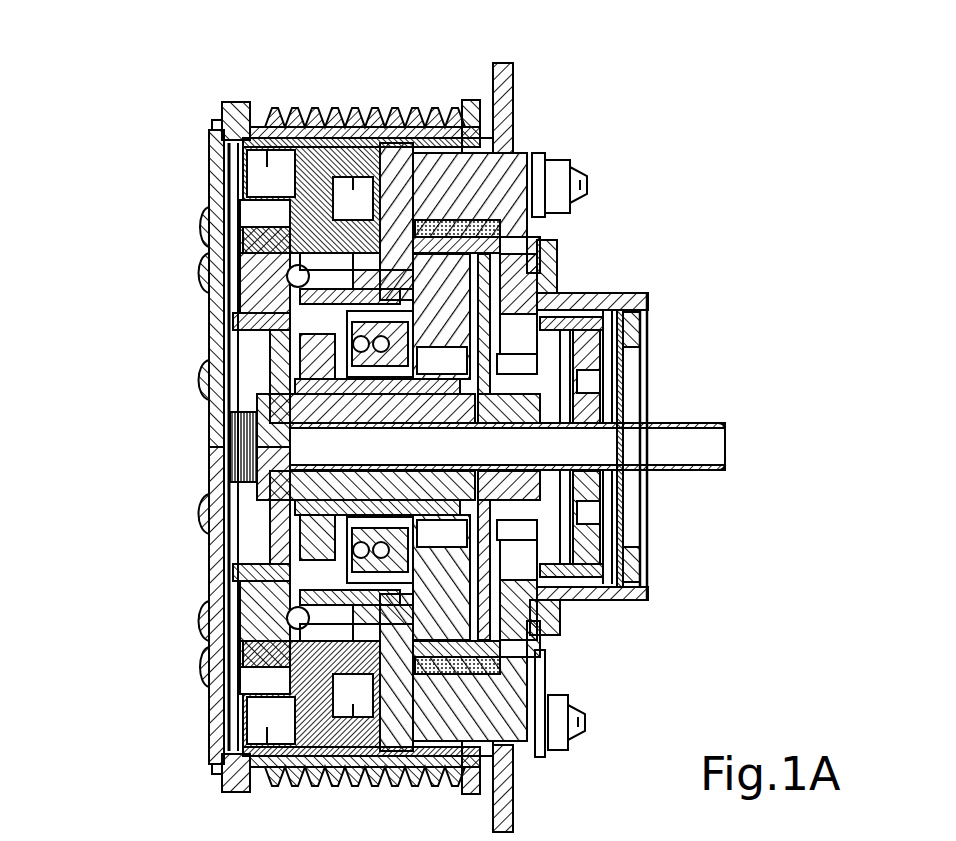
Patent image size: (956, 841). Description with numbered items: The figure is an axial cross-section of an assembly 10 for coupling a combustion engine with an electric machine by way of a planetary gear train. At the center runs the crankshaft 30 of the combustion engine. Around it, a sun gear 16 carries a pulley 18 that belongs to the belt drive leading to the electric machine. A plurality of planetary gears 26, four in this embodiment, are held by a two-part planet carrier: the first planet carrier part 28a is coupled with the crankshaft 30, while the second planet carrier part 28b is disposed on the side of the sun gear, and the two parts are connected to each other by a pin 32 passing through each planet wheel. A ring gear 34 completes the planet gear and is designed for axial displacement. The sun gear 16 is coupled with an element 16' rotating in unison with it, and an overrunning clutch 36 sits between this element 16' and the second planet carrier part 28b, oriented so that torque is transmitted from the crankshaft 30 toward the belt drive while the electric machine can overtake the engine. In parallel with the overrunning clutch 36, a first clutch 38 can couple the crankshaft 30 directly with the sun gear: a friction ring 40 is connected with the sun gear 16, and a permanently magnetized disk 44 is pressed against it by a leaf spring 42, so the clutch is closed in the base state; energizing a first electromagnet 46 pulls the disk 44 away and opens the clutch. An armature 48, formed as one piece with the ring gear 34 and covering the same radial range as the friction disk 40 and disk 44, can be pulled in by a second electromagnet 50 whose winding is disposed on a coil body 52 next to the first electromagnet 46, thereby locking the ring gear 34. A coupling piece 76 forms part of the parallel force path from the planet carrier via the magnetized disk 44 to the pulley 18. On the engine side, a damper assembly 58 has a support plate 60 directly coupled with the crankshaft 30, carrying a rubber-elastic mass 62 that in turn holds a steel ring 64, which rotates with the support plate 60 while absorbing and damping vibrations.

The assembly 10 is at (126, 128).
The sun gear 16 is at (153, 447).
The element 16' is at (157, 447).
The pulley 18 is at (374, 108).
The planetary gears 26 is at (540, 243).
The first planet carrier part 28a is at (545, 275).
The second planet carrier part 28b is at (225, 247).
The crankshaft 30 is at (723, 455).
The pin 32 is at (470, 345).
The ring gear 34 is at (535, 230).
The overrunning clutch 36 is at (280, 318).
The first clutch 38 is at (262, 126).
The friction ring 40 is at (207, 172).
The leaf spring 42 is at (212, 548).
The permanently magnetized disk 44 is at (220, 128).
The first electromagnet 46 is at (290, 112).
The armature 48 is at (512, 160).
The second electromagnet 50 is at (405, 145).
The coil body 52 is at (329, 122).
The damper assembly 58 is at (527, 131).
The support plate 60 is at (624, 551).
The rubber-elastic mass 62 is at (545, 185).
The steel ring 64 is at (468, 114).
The coupling piece 76 is at (232, 332).